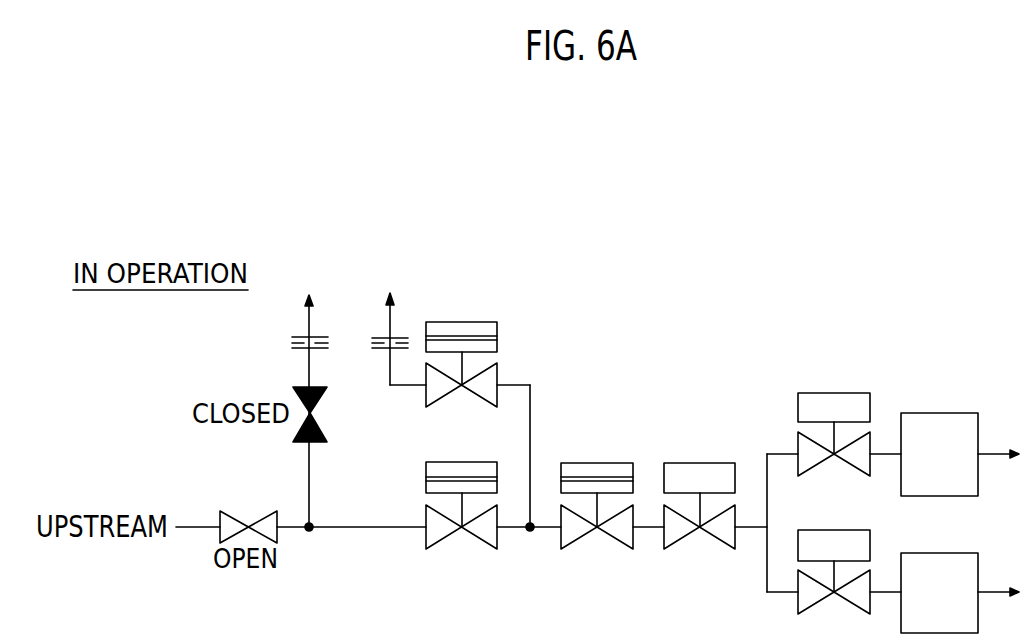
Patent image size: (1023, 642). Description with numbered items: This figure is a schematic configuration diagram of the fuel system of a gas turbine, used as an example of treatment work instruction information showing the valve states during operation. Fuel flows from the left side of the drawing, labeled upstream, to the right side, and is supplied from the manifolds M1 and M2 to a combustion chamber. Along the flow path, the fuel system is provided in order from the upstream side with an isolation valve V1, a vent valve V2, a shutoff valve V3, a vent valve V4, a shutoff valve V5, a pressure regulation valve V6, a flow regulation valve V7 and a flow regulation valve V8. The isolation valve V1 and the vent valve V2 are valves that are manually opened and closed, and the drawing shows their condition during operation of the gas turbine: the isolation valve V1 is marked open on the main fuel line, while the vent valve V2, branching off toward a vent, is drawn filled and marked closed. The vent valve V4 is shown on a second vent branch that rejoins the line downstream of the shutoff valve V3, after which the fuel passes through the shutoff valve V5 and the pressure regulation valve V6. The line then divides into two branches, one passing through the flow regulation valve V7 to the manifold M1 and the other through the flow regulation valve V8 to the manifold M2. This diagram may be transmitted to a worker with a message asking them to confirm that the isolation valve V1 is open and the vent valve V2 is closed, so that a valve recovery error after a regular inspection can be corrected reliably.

The isolation valve V1 is at (232, 512).
The vent valve V2 is at (323, 398).
The shutoff valve V3 is at (464, 463).
The vent valve V4 is at (464, 322).
The shutoff valve V5 is at (600, 463).
The pressure regulation valve V6 is at (703, 463).
The flow regulation valve V7 is at (838, 393).
The flow regulation valve V8 is at (838, 531).
The manifold M1 is at (928, 413).
The manifold M2 is at (928, 553).